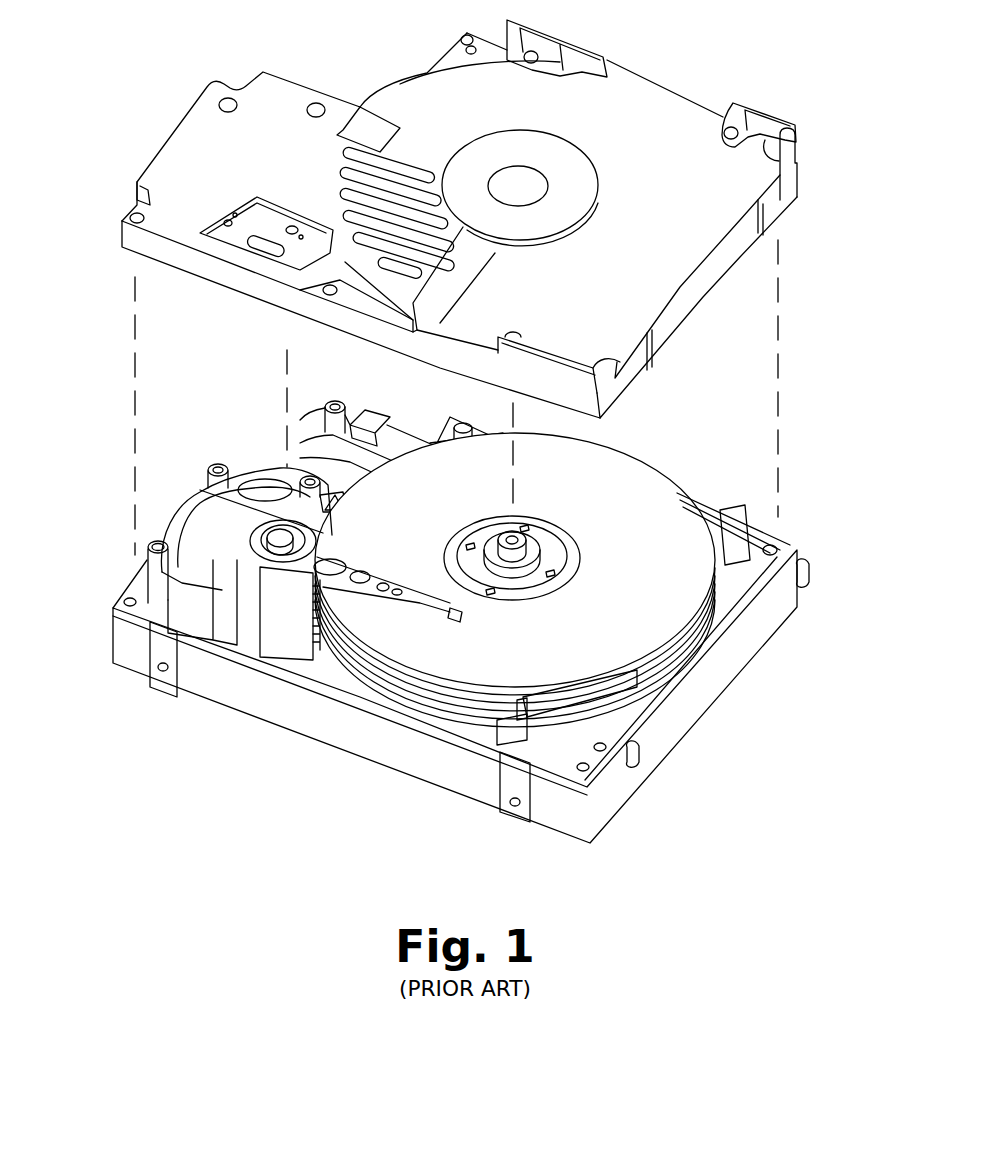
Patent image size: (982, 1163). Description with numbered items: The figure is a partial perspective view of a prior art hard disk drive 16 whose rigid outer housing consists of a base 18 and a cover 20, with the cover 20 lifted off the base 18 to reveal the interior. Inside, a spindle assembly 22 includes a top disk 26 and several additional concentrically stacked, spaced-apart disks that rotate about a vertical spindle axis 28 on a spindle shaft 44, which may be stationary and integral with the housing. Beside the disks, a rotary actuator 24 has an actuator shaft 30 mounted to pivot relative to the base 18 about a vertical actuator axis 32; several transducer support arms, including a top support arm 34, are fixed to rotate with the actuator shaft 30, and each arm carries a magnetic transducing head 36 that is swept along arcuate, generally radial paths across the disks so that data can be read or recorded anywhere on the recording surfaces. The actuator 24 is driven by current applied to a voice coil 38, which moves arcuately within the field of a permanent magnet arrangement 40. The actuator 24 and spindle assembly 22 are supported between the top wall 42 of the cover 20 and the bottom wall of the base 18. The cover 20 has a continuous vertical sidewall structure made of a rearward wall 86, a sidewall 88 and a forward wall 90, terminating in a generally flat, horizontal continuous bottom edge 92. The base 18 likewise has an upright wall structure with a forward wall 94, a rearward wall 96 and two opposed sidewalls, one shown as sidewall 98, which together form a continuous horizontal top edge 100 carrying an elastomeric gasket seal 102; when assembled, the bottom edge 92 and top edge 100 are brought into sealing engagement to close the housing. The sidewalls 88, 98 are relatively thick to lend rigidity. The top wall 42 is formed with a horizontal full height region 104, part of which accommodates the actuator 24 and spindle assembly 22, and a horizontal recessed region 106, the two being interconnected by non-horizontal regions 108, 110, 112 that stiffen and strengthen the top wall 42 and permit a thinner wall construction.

The hard disk drive 16 is at (175, 112).
The base 18 is at (730, 655).
The cover 20 is at (640, 98).
The spindle assembly 22 is at (673, 480).
The rotary actuator 24 is at (282, 633).
The top disk 26 is at (612, 480).
The spindle axis 28 is at (510, 490).
The actuator shaft 30 is at (300, 541).
The actuator axis 32 is at (285, 387).
The top support arm 34 is at (390, 595).
The transducing head 36 is at (463, 620).
The voice coil 38 is at (170, 522).
The permanent magnet arrangement 40 is at (255, 488).
The top wall 42 is at (417, 98).
The spindle shaft 44 is at (520, 555).
The rearward wall 86 is at (700, 293).
The sidewall 88 is at (202, 265).
The forward wall 90 is at (153, 157).
The bottom edge 92 is at (393, 350).
The forward wall 94 is at (123, 589).
The rearward wall 96 is at (667, 743).
The sidewall 98 is at (348, 737).
The top edge 100 is at (777, 530).
The elastomeric gasket seal 102 is at (697, 663).
The full height region 104 is at (267, 93).
The recessed region 106 is at (753, 187).
The non-horizontal region 108 is at (567, 238).
The non-horizontal region 110 is at (465, 280).
The non-horizontal region 112 is at (365, 138).